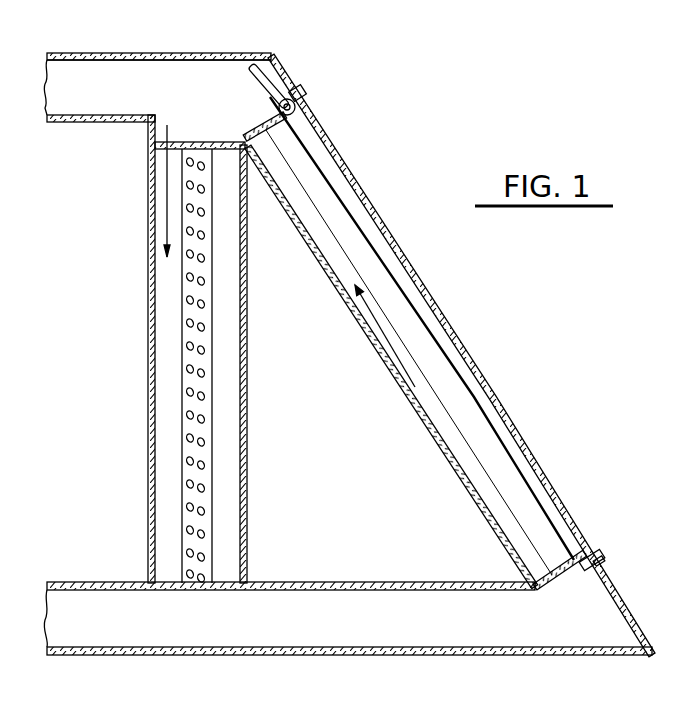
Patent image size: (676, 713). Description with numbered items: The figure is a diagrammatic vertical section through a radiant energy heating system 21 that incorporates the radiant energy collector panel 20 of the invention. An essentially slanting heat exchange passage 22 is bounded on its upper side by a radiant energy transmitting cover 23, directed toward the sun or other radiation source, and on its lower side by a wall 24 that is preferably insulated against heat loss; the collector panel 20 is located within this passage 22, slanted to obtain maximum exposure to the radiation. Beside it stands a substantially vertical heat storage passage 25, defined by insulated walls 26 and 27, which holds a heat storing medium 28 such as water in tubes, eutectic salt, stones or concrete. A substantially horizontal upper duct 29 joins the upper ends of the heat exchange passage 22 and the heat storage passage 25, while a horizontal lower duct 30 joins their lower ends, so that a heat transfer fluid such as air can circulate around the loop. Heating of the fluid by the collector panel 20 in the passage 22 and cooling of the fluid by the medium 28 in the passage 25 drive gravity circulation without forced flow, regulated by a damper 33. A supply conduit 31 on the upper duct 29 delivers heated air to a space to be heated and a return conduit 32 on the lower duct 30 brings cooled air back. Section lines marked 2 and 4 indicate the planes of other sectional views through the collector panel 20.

The radiant energy collector panel 20 is at (449, 354).
The radiant energy heating system 21 is at (340, 131).
The heat exchange passage 22 is at (475, 397).
The radiant energy transmitting cover 23 is at (463, 347).
The wall 24 is at (412, 408).
The heat storage passage 25 is at (160, 378).
The wall 26 is at (151, 412).
The wall 27 is at (247, 392).
The heat storing medium 28 is at (213, 433).
The upper duct 29 is at (245, 36).
The lower duct 30 is at (283, 636).
The supply conduit 31 is at (84, 72).
The return conduit 32 is at (113, 563).
The damper 33 is at (278, 74).
The section line for FIG. 2 is at (403, 218).
The section line for FIG. 4 is at (438, 268).